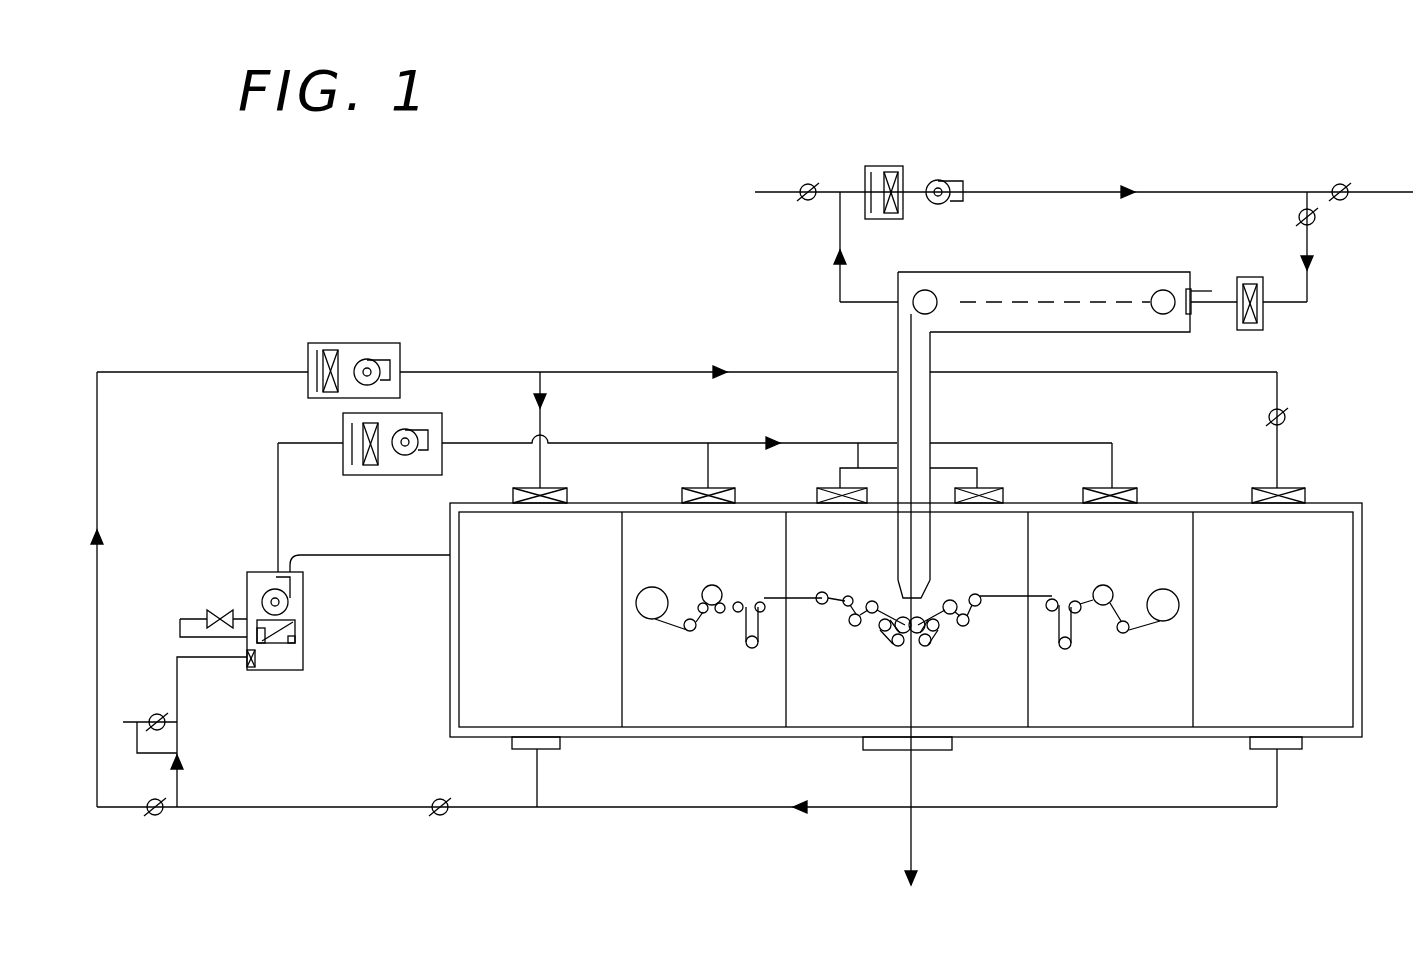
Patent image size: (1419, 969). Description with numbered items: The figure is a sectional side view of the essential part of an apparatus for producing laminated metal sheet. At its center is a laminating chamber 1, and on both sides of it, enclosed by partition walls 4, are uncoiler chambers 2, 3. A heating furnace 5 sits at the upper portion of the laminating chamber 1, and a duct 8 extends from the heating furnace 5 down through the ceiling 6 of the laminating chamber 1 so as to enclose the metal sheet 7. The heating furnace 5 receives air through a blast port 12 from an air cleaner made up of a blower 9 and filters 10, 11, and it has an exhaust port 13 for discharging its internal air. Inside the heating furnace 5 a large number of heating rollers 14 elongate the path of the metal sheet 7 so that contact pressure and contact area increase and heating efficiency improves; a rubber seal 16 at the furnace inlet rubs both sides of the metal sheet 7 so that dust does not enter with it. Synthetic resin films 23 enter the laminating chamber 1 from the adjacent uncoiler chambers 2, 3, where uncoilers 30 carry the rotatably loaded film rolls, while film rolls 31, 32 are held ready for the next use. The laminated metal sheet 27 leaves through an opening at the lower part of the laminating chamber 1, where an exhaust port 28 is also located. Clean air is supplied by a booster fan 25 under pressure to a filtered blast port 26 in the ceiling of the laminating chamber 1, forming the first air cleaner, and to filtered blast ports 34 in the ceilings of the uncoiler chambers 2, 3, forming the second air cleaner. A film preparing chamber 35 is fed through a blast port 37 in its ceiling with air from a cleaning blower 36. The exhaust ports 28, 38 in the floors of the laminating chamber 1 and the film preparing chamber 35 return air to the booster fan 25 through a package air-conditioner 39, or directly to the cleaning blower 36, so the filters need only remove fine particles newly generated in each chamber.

The laminating chamber 1 is at (815, 697).
The uncoiler chamber 2 is at (682, 702).
The uncoiler chamber 3 is at (1095, 700).
The partition wall 4 is at (780, 697).
The heating furnace 5 is at (1050, 272).
The ceiling 6 is at (750, 505).
The metal sheet 7 is at (897, 390).
The duct 8 is at (932, 425).
The blower 9 is at (942, 178).
The filter 10 is at (884, 166).
The filter 11 is at (1265, 328).
The blast port 12 is at (1193, 310).
The exhaust port 13 is at (897, 302).
The heating roller 14 is at (932, 292).
The rubber seal 16 is at (1192, 295).
The synthetic resin film 23 is at (836, 592).
The booster fan 25 is at (440, 418).
The blast port 26 is at (826, 488).
The laminated metal sheet 27 is at (912, 800).
The exhaust port 28 is at (866, 750).
The uncoiler 30 is at (652, 587).
The film roll 31 is at (714, 585).
The film roll 32 is at (1100, 585).
The blast port 34 is at (688, 488).
The film preparing chamber 35 is at (482, 648).
The cleaning blower 36 is at (348, 343).
The blast port 37 is at (525, 488).
The exhaust port 38 is at (525, 750).
The package air-conditioner 39 is at (283, 665).